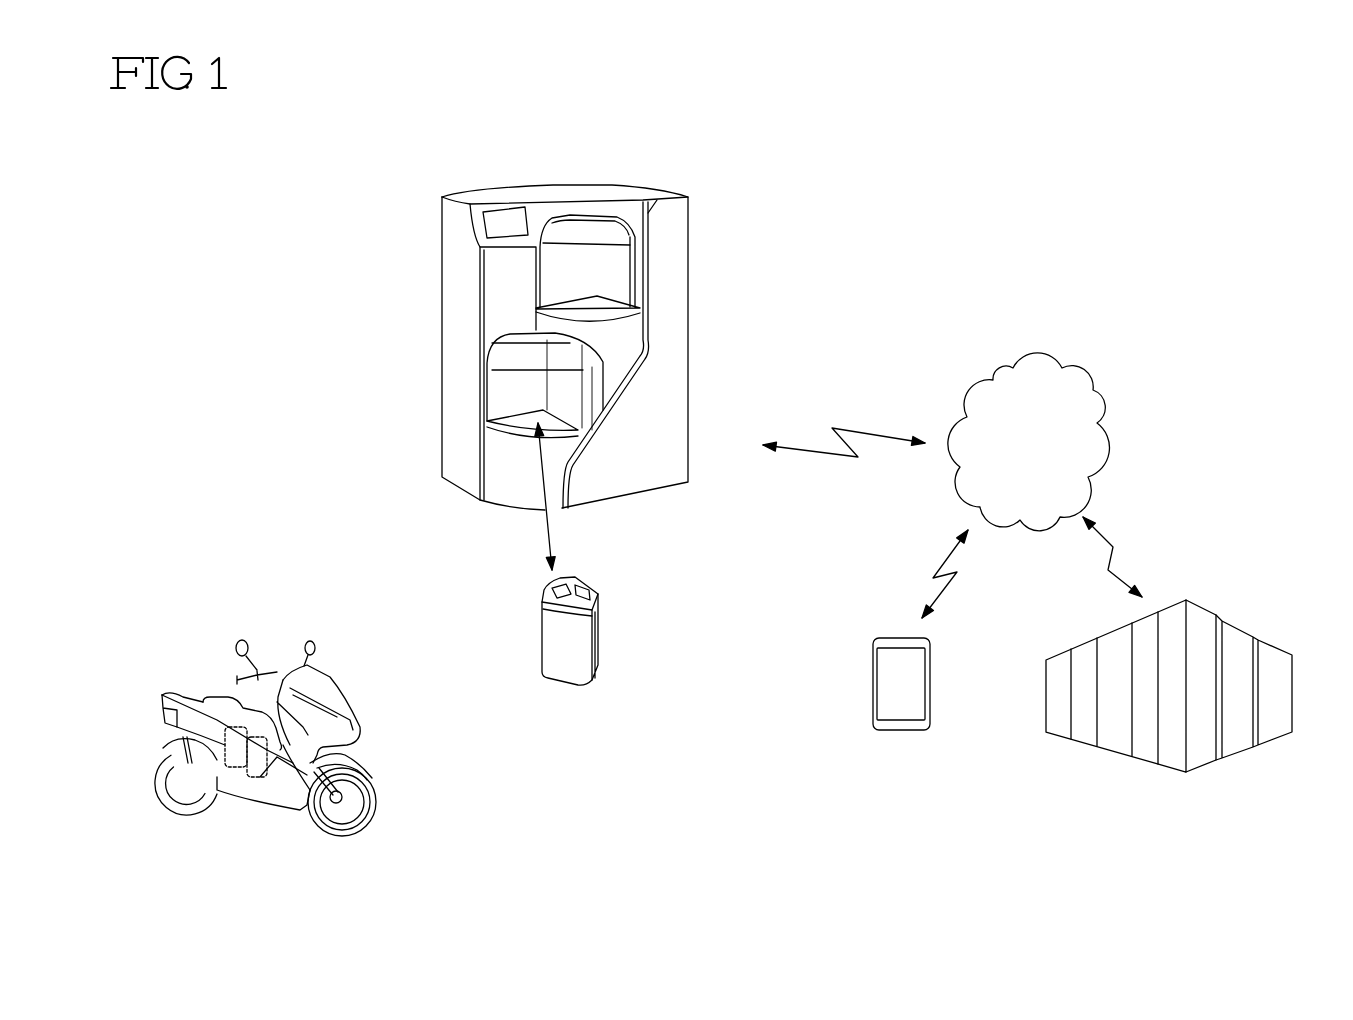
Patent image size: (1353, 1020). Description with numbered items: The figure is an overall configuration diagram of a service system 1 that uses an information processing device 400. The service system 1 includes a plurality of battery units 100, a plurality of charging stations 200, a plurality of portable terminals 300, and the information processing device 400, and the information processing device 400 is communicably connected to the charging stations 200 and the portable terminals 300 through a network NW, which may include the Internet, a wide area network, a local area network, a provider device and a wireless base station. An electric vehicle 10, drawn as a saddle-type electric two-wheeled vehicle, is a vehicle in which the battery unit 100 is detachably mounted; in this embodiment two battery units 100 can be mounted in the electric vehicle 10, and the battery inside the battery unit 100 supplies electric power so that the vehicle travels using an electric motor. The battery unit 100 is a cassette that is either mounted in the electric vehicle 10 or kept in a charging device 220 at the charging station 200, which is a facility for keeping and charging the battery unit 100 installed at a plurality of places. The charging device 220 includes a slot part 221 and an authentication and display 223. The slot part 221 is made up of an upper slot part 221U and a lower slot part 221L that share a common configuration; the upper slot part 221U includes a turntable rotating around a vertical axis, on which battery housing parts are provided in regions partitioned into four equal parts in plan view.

The service system 1 is at (229, 203).
The electric vehicle 10 is at (290, 655).
The battery unit 100 is at (592, 630).
The charging station 200 is at (338, 185).
The charging device 220 is at (460, 382).
The slot part 221 is at (805, 262).
The upper slot part 221U is at (610, 278).
The lower slot part 221L is at (560, 380).
The authentication and display 223 is at (502, 220).
The portable terminal 300 is at (872, 684).
The information processing device 400 is at (1198, 752).
The network NW is at (1043, 357).